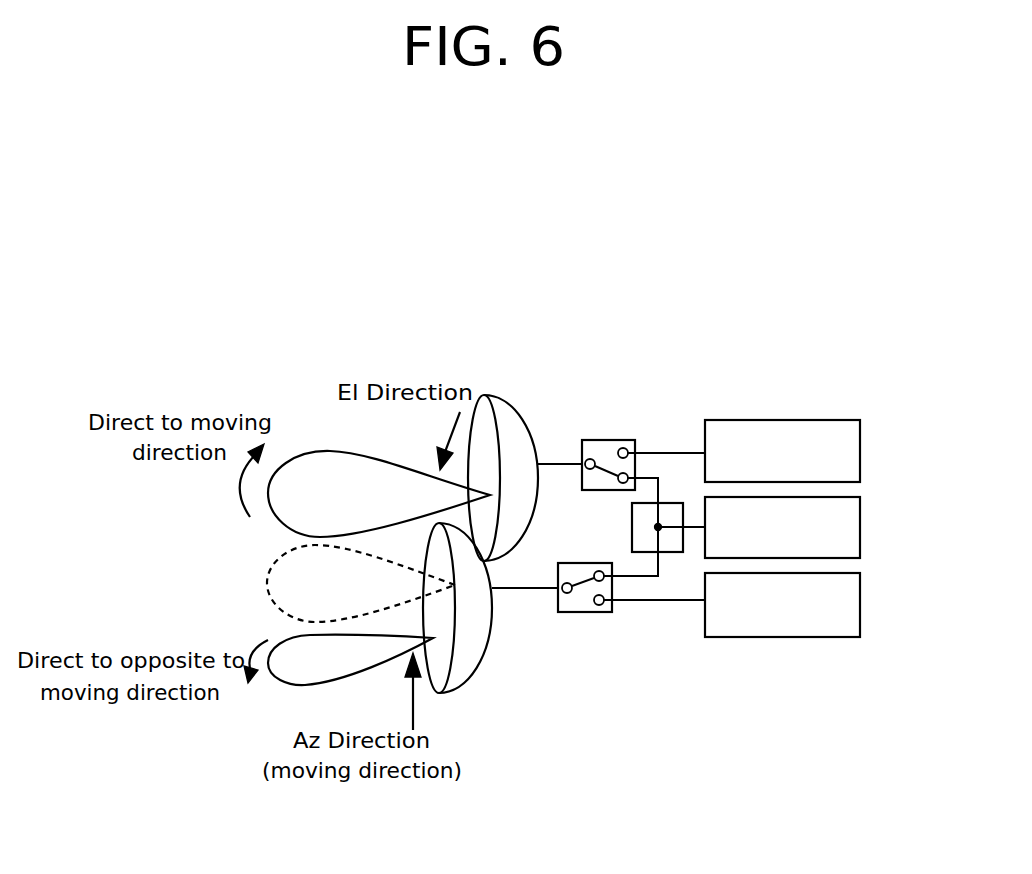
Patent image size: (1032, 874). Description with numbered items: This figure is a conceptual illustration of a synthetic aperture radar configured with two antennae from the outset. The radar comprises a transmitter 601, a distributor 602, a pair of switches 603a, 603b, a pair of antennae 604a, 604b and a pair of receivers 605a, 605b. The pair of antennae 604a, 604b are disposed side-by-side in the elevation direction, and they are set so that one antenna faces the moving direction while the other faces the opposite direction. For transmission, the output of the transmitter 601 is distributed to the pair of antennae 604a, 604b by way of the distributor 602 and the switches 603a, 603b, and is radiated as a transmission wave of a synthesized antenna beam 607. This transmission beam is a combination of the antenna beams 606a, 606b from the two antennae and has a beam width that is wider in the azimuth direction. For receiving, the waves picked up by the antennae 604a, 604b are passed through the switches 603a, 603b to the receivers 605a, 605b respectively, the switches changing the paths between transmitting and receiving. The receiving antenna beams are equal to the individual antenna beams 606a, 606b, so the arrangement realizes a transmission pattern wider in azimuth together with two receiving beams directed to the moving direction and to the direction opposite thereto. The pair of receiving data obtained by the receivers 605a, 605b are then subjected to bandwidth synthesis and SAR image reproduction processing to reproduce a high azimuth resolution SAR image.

The transmitter 601 is at (860, 523).
The distributor 602 is at (672, 553).
The switch 603a is at (612, 440).
The switch 603b is at (592, 612).
The antenna 604a is at (505, 400).
The antenna 604b is at (450, 692).
The receiver 605a is at (860, 446).
The receiver 605b is at (860, 600).
The antenna beam 606a is at (330, 450).
The antenna beam 606b is at (287, 685).
The synthesized antenna beam 607 is at (268, 577).